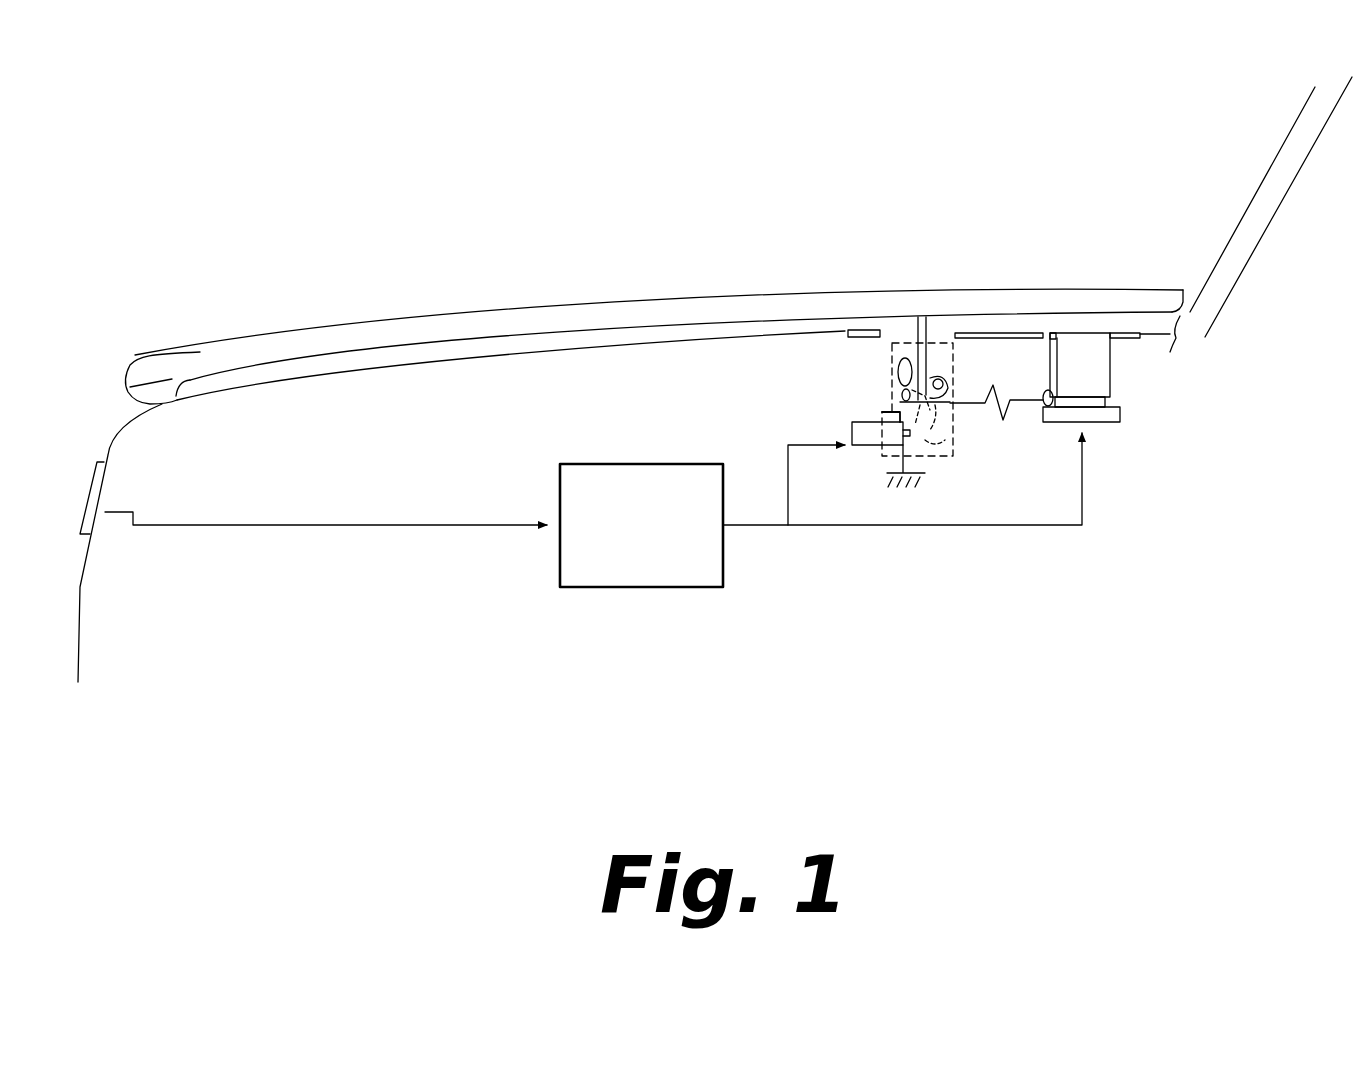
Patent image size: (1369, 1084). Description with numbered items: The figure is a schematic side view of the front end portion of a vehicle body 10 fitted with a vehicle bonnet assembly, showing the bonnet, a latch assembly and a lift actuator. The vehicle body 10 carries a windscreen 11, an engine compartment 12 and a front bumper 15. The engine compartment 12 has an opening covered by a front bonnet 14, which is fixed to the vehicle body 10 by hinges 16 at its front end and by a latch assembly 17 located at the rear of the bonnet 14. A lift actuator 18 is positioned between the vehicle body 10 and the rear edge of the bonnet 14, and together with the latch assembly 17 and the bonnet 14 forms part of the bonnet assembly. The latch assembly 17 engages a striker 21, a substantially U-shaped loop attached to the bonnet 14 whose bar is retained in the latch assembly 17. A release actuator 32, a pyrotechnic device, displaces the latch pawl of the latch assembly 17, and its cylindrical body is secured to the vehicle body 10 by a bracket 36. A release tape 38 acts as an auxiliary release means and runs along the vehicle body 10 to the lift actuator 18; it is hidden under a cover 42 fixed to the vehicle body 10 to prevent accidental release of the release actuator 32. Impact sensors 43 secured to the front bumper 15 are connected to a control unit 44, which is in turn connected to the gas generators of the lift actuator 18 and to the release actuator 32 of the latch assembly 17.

The vehicle body 10 is at (1120, 589).
The windscreen 11 is at (1257, 207).
The engine compartment 12 is at (452, 452).
The front bonnet 14 is at (582, 316).
The front bumper 15 is at (80, 602).
The hinges 16 is at (150, 386).
The latch assembly 17 is at (890, 363).
The lift actuator 18 is at (1130, 418).
The striker 21 is at (917, 335).
The release actuator 32 is at (862, 437).
The bracket 36 is at (908, 466).
The release tape 38 is at (1013, 406).
The cover 42 is at (988, 335).
The impact sensor 43 is at (100, 490).
The control unit 44 is at (658, 540).